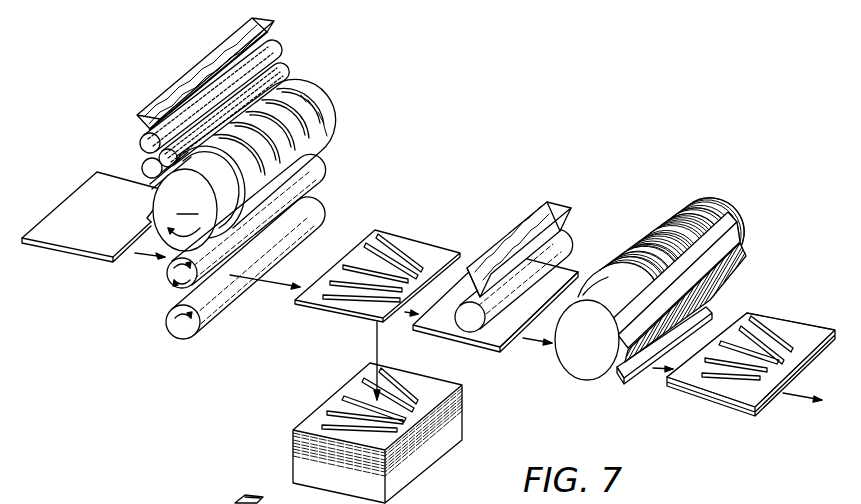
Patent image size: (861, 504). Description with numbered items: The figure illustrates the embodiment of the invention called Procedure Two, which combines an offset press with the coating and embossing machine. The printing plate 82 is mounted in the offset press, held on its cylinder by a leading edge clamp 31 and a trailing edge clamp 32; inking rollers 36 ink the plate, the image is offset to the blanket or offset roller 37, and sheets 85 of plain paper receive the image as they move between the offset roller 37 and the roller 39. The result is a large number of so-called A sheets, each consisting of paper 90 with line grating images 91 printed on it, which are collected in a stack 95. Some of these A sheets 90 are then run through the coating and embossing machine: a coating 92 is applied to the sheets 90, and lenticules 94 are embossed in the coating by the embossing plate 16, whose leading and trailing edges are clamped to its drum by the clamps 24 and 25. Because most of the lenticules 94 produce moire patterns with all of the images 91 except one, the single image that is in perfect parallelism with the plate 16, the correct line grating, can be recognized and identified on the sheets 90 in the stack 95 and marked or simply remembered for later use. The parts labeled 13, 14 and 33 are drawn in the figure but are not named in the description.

The rod 13 is at (553, 247).
The feed trough 14 is at (563, 200).
The embossing plate 16 is at (670, 213).
The clamp 24 is at (747, 243).
The clamp 25 is at (737, 207).
The leading edge clamp 31 is at (143, 218).
The trailing edge clamp 32 is at (124, 178).
The roll 33 is at (185, 210).
The inking rollers 36 is at (278, 46).
The offset roller 37 is at (316, 173).
The roller 39 is at (314, 210).
The printing plate 82 is at (310, 122).
The sheets 85 is at (59, 238).
The paper 90 is at (428, 252).
The line grating images 91 is at (376, 236).
The coating 92 is at (560, 275).
The lenticules 94 is at (786, 322).
The stack 95 is at (462, 430).